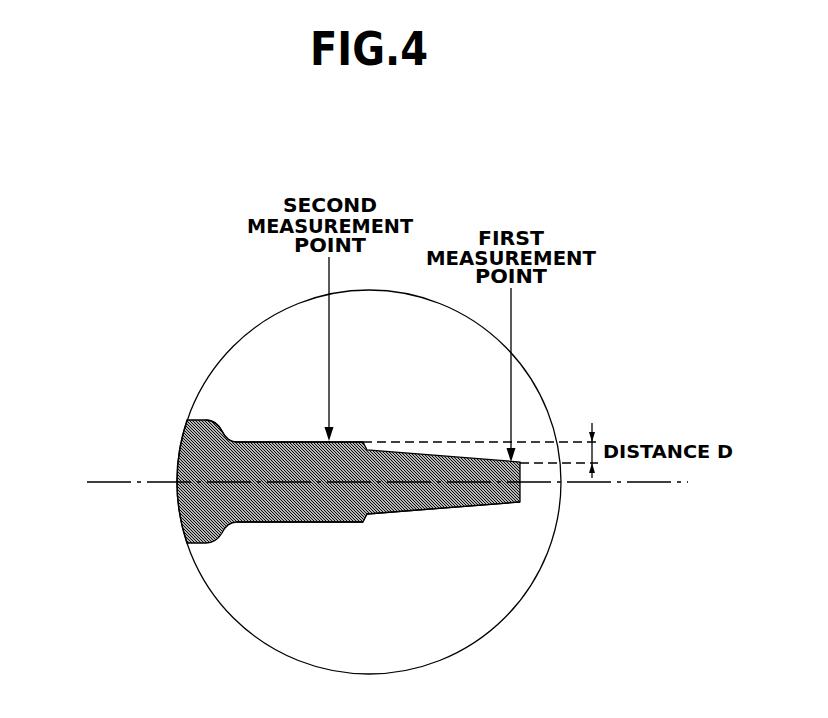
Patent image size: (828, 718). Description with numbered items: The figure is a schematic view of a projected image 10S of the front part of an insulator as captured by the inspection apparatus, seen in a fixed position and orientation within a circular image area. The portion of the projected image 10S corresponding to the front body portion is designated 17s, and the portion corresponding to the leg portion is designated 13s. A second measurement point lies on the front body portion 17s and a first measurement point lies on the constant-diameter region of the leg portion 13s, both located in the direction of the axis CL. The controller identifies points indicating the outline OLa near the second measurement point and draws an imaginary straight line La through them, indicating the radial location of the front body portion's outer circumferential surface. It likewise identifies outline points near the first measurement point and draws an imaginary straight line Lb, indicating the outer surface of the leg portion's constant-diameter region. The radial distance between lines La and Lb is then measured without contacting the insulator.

The axis CL is at (370, 483).
The imaginary straight line La is at (426, 440).
The imaginary straight line Lb is at (543, 465).
The projected image 10S is at (228, 437).
The outline OLa is at (298, 440).
The front body portion image 17s is at (292, 524).
The leg portion image 13s is at (450, 509).